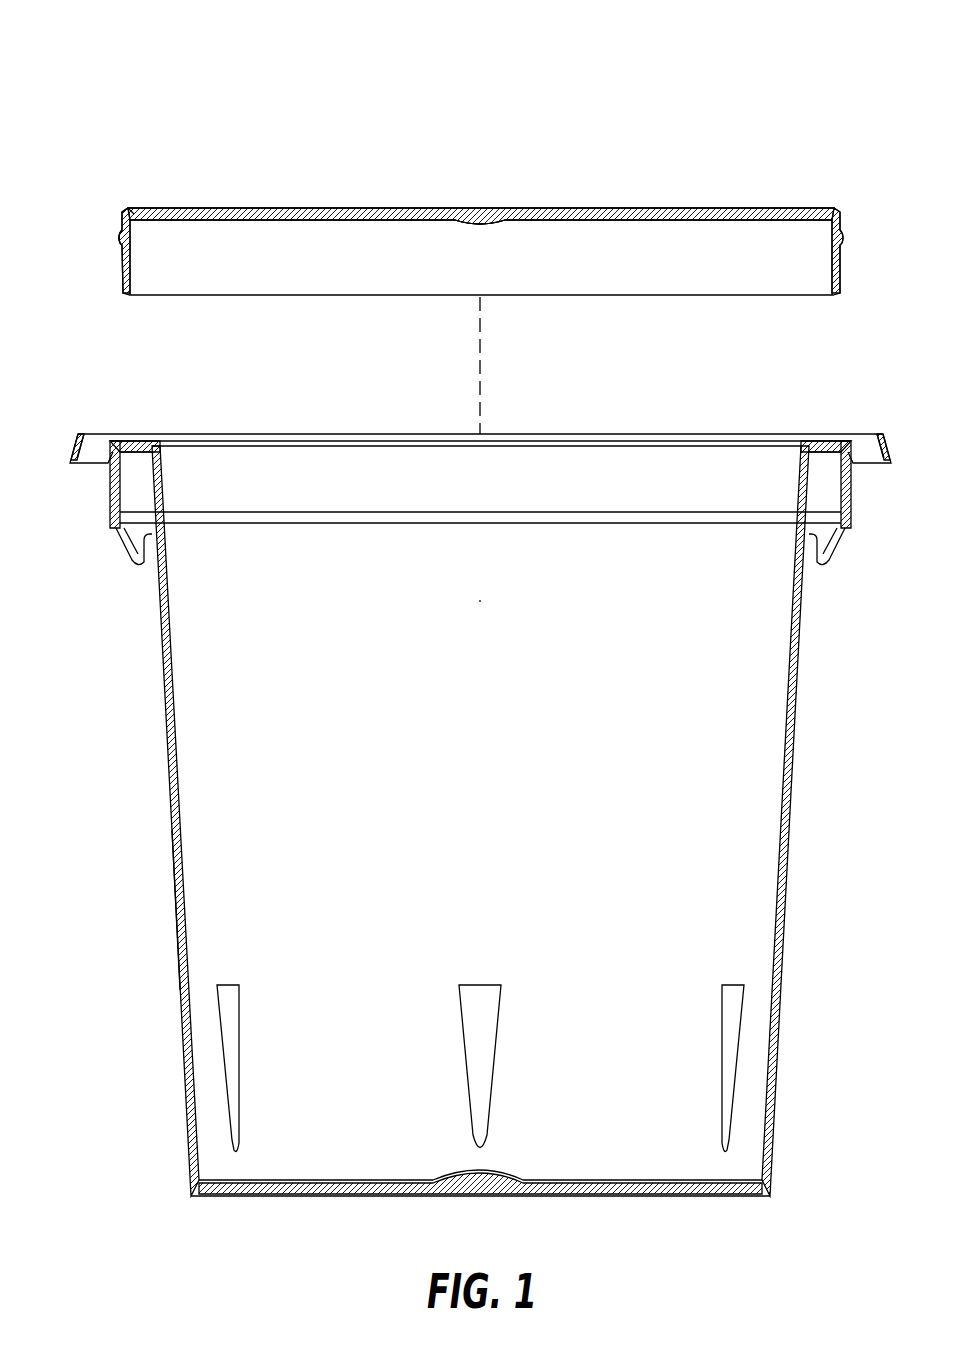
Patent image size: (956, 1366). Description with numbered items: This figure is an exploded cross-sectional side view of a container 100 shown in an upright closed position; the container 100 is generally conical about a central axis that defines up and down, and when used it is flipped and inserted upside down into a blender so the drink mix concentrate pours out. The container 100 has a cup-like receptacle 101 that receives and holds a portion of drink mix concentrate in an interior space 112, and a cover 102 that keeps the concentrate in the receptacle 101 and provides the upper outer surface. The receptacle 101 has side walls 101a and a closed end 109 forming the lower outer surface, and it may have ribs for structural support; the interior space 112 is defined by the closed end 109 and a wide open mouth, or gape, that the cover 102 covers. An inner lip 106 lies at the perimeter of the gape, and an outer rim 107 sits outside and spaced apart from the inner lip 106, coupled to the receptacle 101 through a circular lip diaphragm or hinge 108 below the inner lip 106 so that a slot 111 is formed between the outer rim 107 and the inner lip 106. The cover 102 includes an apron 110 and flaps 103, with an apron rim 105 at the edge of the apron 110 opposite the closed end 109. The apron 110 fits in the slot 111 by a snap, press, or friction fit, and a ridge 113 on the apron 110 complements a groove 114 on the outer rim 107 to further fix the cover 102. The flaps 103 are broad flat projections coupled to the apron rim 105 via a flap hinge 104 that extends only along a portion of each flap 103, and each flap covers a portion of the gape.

The container 100 is at (772, 78).
The receptacle 101 is at (804, 734).
The side walls 101a is at (788, 878).
The cover 102 is at (437, 196).
The flaps 103 is at (690, 209).
The flap hinge 104 is at (483, 212).
The apron rim 105 is at (124, 209).
The inner lip 106 is at (156, 445).
The outer rim 107 is at (96, 433).
The lip diaphragm or hinge 108 is at (135, 566).
The closed end 109 is at (280, 1192).
The apron 110 is at (120, 276).
The slot 111 is at (823, 495).
The interior space 112 is at (571, 565).
The ridge 113 is at (118, 238).
The groove 114 is at (144, 448).